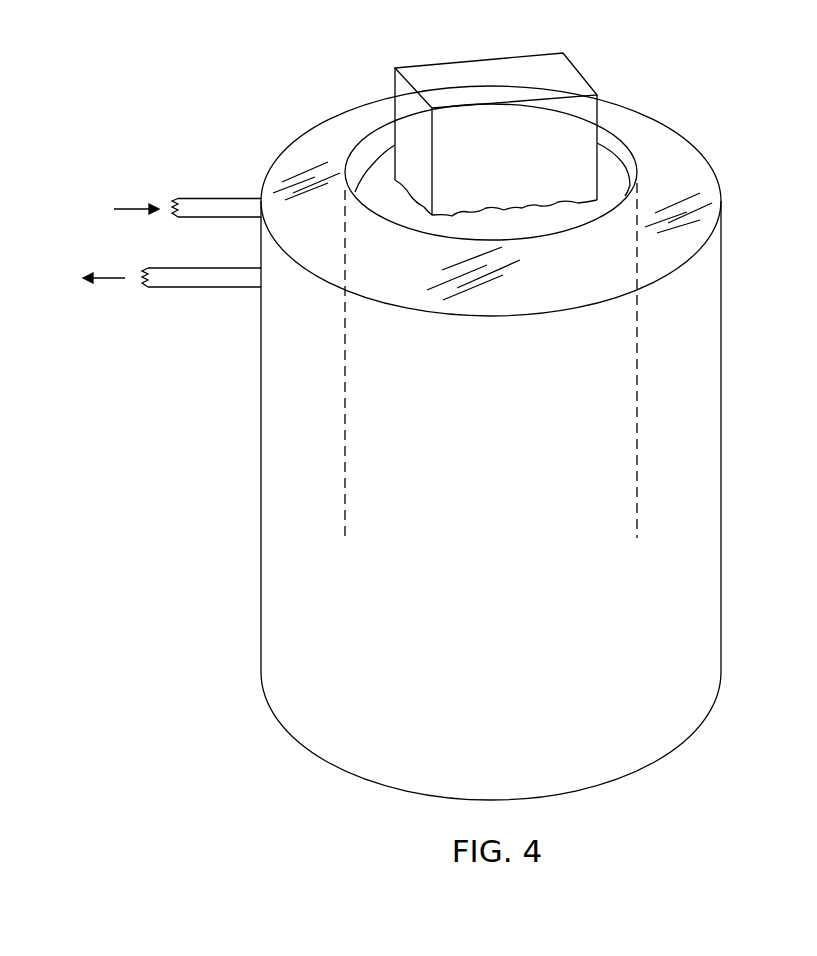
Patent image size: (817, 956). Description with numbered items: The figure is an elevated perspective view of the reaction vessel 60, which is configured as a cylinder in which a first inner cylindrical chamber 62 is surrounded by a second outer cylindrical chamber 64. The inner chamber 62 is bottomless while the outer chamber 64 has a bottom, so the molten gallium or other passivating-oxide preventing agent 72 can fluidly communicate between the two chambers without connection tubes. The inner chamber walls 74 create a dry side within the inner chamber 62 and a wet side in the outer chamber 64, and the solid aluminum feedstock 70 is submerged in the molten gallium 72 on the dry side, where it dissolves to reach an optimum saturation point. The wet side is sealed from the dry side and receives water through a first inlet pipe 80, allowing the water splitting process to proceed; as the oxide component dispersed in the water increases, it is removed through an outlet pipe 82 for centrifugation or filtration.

The reaction vessel 60 is at (723, 497).
The first inner chamber 62 is at (378, 147).
The second outer chamber 64 is at (491, 143).
The solid aluminum feedstock 70 is at (496, 134).
The molten gallium or other passivating-oxide preventing agent 72 is at (500, 213).
The inner chamber walls 74 is at (639, 378).
The first inlet pipe 80 is at (198, 203).
The outlet pipe 82 is at (198, 282).